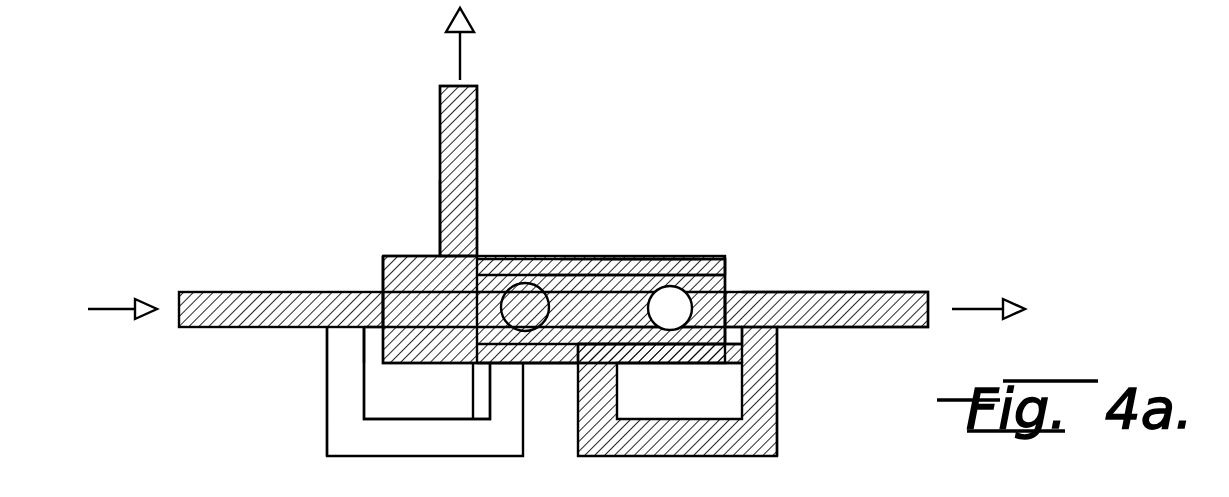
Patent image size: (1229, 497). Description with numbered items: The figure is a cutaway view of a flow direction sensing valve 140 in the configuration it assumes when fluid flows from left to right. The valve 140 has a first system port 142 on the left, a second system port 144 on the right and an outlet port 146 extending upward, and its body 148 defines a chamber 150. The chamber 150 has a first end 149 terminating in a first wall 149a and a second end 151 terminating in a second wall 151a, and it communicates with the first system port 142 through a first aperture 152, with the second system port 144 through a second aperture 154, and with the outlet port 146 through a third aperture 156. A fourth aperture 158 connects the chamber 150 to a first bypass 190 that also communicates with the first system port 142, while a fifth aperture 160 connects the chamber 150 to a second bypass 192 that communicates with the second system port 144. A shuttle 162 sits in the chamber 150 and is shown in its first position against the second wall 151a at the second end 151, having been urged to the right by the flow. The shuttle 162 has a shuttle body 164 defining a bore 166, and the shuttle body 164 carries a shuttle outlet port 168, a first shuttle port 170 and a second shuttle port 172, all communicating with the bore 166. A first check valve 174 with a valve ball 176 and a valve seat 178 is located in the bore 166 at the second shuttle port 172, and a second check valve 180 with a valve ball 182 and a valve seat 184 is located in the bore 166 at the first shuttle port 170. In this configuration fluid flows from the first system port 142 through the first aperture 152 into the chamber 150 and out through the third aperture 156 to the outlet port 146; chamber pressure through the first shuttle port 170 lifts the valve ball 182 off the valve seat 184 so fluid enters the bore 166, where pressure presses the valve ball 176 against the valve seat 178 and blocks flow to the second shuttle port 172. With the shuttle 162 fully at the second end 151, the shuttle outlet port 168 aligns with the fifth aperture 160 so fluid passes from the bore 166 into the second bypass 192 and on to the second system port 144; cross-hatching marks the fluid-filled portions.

The flow direction sensing valve 140 is at (198, 374).
The first system port 142 is at (187, 292).
The second system port 144 is at (967, 343).
The outlet port 146 is at (478, 86).
The body 148 is at (432, 256).
The first end 149 is at (378, 372).
The first wall 149a is at (380, 348).
The chamber 150 is at (385, 288).
The second end 151 is at (742, 373).
The second wall 151a is at (737, 340).
The first aperture 152 is at (377, 320).
The second aperture 154 is at (755, 293).
The third aperture 156 is at (461, 244).
The fourth aperture 158 is at (501, 363).
The fifth aperture 160 is at (588, 404).
The shuttle 162 is at (620, 252).
The shuttle body 164 is at (470, 363).
The bore 166 is at (630, 295).
The shuttle outlet port 168 is at (600, 344).
The first shuttle port 170 is at (472, 300).
The second shuttle port 172 is at (740, 322).
The first check valve 174 is at (693, 254).
The valve ball 176 is at (713, 302).
The valve seat 178 is at (683, 328).
The second check valve 180 is at (492, 345).
The valve ball 182 is at (558, 298).
The valve seat 184 is at (505, 288).
The first bypass 190 is at (408, 456).
The second bypass 192 is at (693, 457).